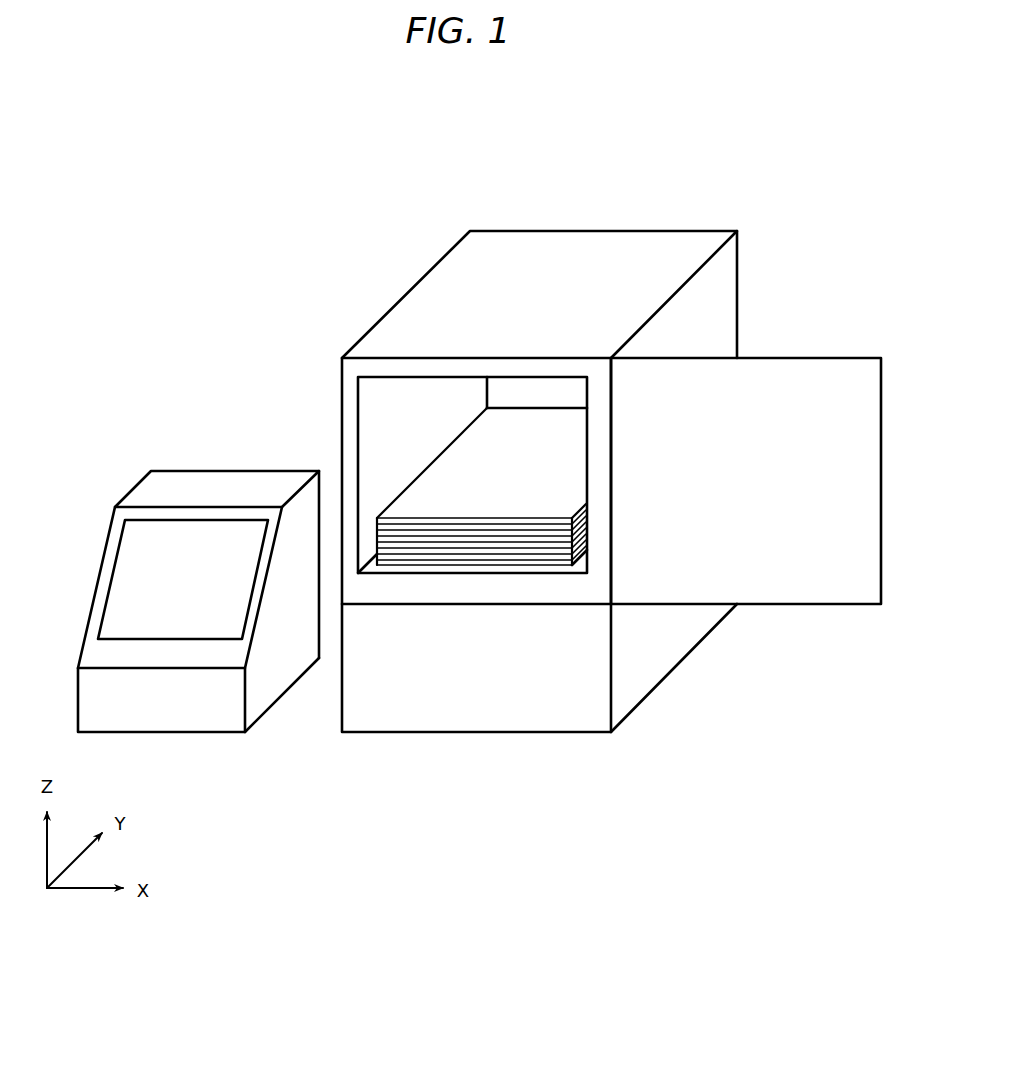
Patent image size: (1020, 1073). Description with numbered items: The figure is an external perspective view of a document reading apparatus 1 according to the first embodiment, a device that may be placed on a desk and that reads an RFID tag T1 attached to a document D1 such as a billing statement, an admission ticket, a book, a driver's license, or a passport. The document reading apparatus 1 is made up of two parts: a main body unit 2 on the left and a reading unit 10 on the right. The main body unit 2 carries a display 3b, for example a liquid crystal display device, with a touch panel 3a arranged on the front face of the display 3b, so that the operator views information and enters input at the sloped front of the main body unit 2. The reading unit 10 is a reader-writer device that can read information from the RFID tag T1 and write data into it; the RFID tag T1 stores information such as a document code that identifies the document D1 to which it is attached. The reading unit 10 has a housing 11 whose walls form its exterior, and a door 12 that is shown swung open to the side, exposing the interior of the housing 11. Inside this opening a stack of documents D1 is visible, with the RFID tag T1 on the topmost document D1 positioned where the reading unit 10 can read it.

The document reading apparatus 1 is at (752, 134).
The reading unit 10 is at (767, 261).
The housing 11 is at (647, 231).
The door 12 is at (815, 359).
The main body unit 2 is at (239, 459).
The touch panel 3a is at (183, 499).
The display 3b is at (195, 544).
The document D1 is at (432, 500).
The RFID tag T1 is at (510, 467).